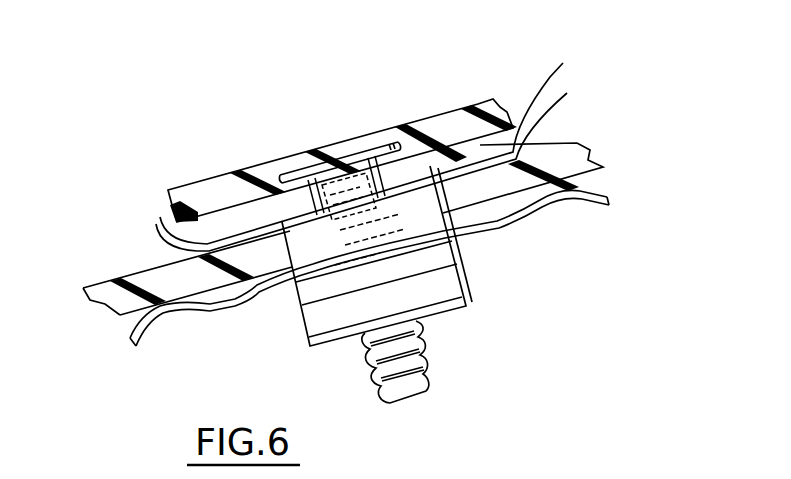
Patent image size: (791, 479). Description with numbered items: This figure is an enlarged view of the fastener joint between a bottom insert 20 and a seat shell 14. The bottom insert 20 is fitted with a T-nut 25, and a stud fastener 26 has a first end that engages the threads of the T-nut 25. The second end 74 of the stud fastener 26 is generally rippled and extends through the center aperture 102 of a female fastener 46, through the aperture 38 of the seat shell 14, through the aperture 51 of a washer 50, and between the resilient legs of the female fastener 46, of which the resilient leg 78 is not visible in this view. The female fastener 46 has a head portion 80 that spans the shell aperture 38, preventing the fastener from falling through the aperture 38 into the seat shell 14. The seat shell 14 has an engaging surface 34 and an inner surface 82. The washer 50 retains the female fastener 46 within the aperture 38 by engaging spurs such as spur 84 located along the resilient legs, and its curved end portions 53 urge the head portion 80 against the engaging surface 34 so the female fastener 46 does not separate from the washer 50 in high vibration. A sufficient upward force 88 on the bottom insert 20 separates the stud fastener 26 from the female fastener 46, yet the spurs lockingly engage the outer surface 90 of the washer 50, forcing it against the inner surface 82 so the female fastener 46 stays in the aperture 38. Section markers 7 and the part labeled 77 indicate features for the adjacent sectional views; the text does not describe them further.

The section line 7- 7 is at (410, 417).
The seat shell 14 is at (587, 117).
The bottom insert 20 is at (447, 110).
The T-nut 25 is at (295, 182).
The stud fastener 26 is at (459, 360).
The engaging surface 34 is at (205, 250).
The aperture 38 is at (430, 187).
The female fastener 46 is at (237, 359).
The washer 50 is at (566, 225).
The aperture 51 is at (467, 273).
The curved end portions 53 is at (601, 216).
The second end 74 is at (385, 388).
The clamp bar 77 is at (298, 150).
The resilient leg 78 is at (455, 314).
The head portion 80 is at (160, 217).
The inner surface 82 is at (533, 217).
The spur 84 is at (357, 262).
The upward force 88 is at (322, 95).
The outer surface 90 is at (488, 235).
The center aperture 102 is at (267, 157).